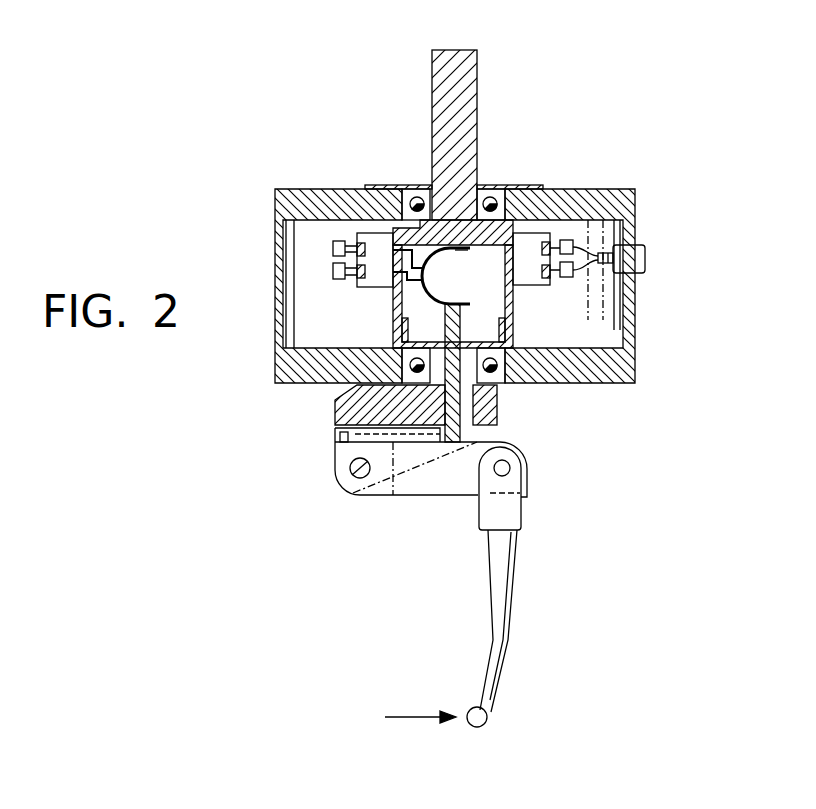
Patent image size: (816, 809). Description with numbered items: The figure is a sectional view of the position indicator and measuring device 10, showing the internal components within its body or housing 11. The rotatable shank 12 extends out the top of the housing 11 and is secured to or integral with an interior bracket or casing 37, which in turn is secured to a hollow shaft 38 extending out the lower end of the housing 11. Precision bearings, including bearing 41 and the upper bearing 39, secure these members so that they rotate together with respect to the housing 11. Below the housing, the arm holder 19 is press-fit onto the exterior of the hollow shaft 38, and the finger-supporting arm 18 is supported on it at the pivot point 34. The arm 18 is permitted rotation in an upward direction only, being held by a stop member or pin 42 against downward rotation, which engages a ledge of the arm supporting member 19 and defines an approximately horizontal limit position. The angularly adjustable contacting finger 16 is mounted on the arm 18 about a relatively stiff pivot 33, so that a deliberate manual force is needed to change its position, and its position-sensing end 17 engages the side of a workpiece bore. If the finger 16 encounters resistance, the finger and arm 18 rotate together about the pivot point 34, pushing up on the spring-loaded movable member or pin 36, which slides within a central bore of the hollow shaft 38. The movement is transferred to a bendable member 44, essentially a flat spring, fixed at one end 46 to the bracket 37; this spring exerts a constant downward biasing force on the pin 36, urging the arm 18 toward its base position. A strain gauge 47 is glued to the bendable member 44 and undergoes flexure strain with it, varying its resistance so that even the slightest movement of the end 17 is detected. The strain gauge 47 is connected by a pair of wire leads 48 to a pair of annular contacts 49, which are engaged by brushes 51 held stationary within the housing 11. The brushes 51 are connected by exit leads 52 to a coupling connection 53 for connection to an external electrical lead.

The position indicator and measuring device 10 is at (262, 149).
The housing 11 is at (273, 300).
The rotatable shank 12 is at (470, 90).
The contacting finger 16 is at (508, 575).
The position-sensing end 17 is at (487, 718).
The arm 18 is at (420, 483).
The arm holder 19 is at (352, 402).
The pivot 33 is at (510, 468).
The pivot point 34 is at (357, 485).
The movable member 36 is at (505, 303).
The interior bracket 37 is at (497, 233).
The hollow shaft 38 is at (497, 410).
The upper bearing 39 is at (407, 193).
The precision bearing 41 is at (400, 381).
The stop member 42 is at (340, 436).
The bendable member 44 is at (435, 287).
The end 46 is at (458, 252).
The strain gauge 47 is at (407, 283).
The wire leads 48 is at (383, 268).
The annular contacts 49 is at (360, 268).
The brushes 51 is at (570, 263).
The exit leads 52 is at (592, 262).
The coupling connection 53 is at (640, 245).